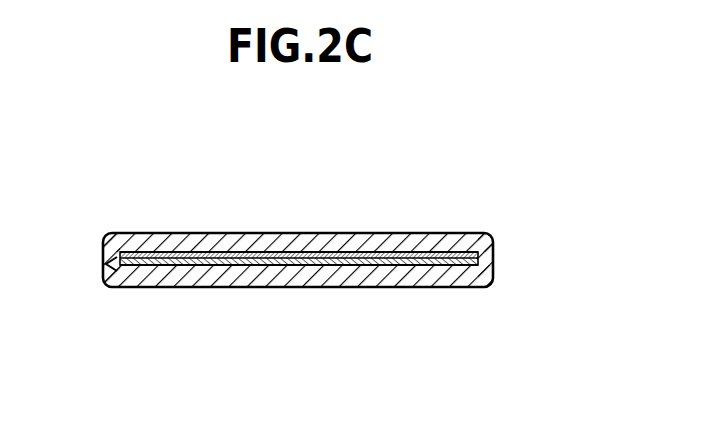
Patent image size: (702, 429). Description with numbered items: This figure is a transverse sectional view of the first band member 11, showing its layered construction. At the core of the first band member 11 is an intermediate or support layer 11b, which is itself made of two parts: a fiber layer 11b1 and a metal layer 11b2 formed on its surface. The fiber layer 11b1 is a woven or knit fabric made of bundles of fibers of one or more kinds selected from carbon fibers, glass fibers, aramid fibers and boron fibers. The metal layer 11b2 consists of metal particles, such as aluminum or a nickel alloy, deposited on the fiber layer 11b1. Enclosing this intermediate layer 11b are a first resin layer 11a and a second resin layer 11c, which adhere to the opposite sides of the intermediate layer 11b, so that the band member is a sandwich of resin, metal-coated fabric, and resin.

The first band member 11 is at (310, 213).
The first resin layer 11a is at (204, 247).
The intermediate layer 11b is at (303, 190).
The fiber layer 11b1 is at (348, 163).
The metal layer 11b2 is at (377, 254).
The second resin layer 11c is at (270, 287).